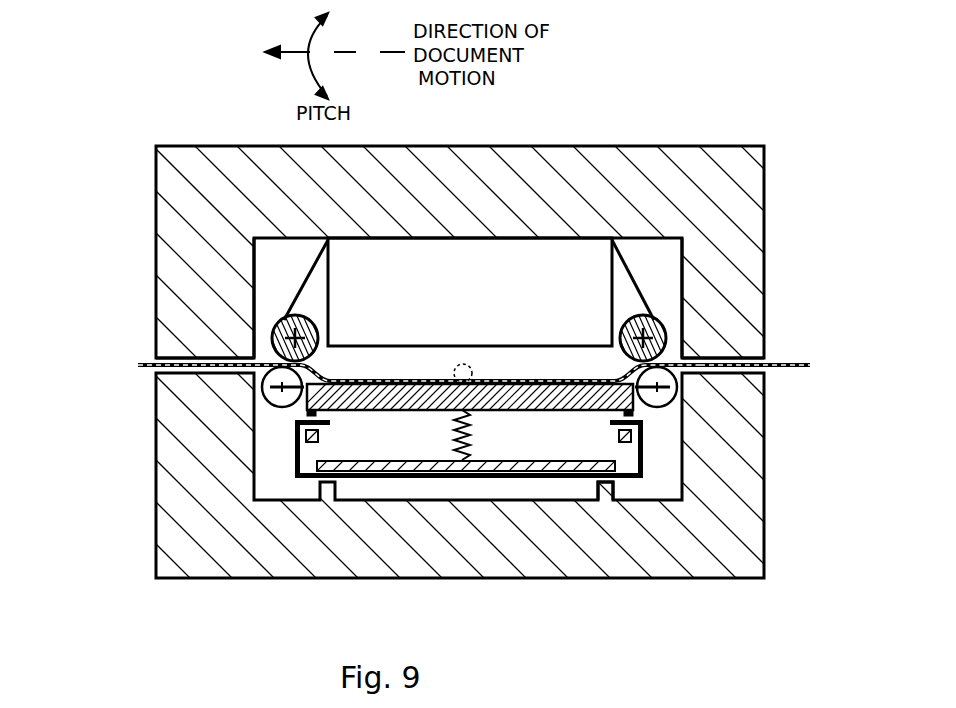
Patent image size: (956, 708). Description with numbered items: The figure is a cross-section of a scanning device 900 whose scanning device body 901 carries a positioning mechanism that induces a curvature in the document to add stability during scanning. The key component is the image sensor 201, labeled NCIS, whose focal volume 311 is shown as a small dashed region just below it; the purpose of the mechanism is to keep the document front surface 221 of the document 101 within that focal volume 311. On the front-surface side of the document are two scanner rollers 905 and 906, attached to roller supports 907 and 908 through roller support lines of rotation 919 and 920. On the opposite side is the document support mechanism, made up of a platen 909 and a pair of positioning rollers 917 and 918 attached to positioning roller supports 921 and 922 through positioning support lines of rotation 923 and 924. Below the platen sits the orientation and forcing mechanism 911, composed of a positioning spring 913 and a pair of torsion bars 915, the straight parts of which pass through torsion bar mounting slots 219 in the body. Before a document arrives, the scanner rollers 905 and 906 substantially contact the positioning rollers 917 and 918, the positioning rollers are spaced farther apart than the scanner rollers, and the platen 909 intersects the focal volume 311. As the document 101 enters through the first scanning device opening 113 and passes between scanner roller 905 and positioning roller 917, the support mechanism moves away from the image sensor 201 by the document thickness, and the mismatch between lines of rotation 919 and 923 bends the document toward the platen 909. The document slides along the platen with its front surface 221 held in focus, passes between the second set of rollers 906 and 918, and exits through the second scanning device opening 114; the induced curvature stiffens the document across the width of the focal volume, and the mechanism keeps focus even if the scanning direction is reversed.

The image reading apparatus 900 is at (588, 64).
The scanning device body 901 is at (596, 146).
The roller support 907 is at (652, 318).
The roller support 908 is at (283, 318).
The scanner roller 905 is at (665, 328).
The scanner roller 906 is at (275, 324).
The roller support line of rotation 919 is at (684, 282).
The roller support line of rotation 920 is at (255, 290).
The first scanning device opening 113 is at (760, 358).
The second scanning device opening 114 is at (150, 357).
The document front surface 221 is at (790, 366).
The document 101 is at (772, 366).
The positioning roller 917 is at (678, 392).
The positioning roller support 922 is at (262, 387).
The positioning support line of rotation 923 is at (640, 416).
The positioning support line of rotation 924 is at (252, 350).
The positioning roller 918 is at (307, 412).
The platen 909 is at (300, 436).
The positioning roller support 921 is at (648, 442).
The orientation and forcing mechanism 911 is at (339, 482).
The positioning spring 913 is at (296, 478).
The torsion bar 915 is at (318, 468).
The torsion bar mounting slot 219 is at (640, 486).
The image sensor 201 is at (462, 252).
The focal volume 311 is at (482, 370).